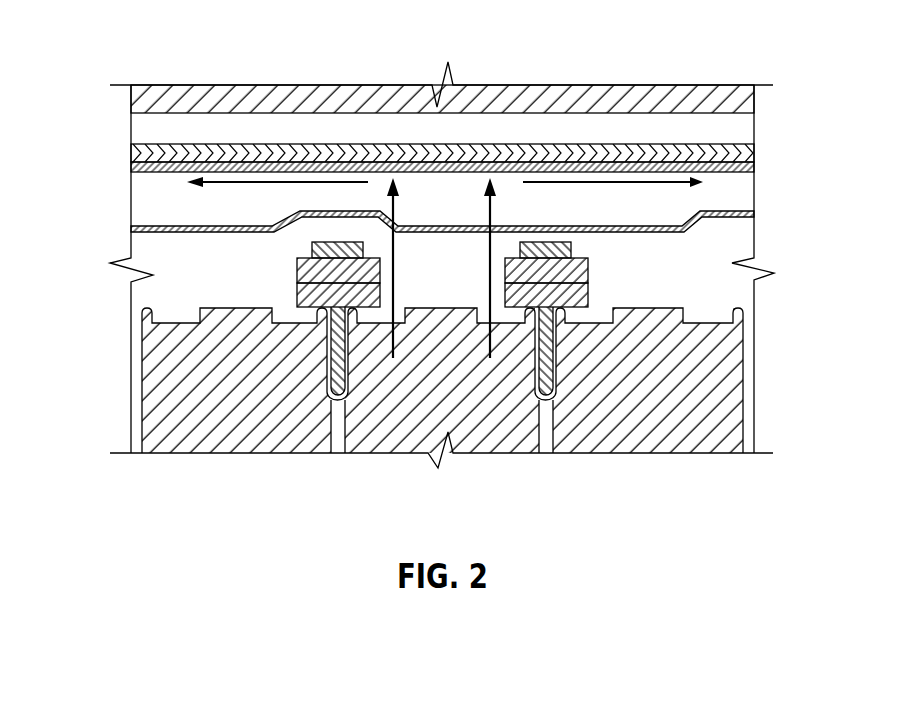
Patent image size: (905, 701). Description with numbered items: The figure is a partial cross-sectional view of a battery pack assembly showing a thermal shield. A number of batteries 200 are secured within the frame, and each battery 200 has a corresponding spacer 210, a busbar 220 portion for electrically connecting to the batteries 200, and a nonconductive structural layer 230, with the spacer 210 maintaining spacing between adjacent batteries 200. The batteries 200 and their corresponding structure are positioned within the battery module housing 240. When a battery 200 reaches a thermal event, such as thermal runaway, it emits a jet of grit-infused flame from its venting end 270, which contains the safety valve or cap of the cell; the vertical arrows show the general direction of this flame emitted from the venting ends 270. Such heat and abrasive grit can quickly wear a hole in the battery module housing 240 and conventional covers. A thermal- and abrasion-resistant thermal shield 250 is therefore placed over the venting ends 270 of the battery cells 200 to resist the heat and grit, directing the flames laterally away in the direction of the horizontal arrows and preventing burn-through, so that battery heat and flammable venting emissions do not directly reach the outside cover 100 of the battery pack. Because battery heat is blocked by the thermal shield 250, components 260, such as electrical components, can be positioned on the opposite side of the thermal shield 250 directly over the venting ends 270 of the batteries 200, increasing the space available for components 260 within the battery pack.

The cover 100 is at (682, 85).
The battery 200 is at (488, 453).
The spacer 210 is at (310, 297).
The busbar 220 is at (310, 273).
The nonconductive structural layer 230 is at (313, 250).
The battery module housing 240 is at (610, 232).
The thermal shield 250 is at (735, 173).
The components 260 is at (742, 143).
The venting ends 270 is at (421, 283).